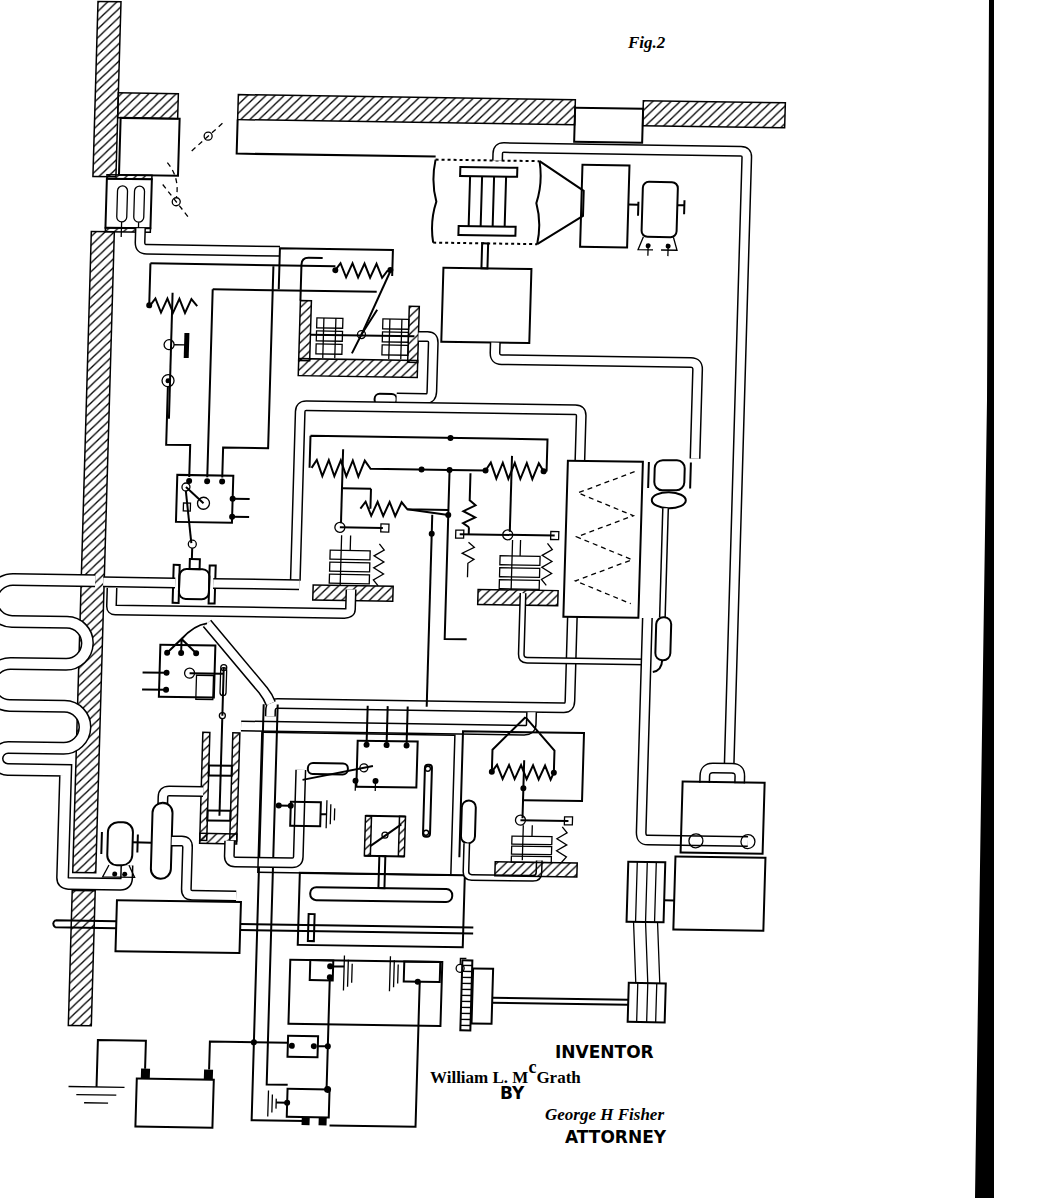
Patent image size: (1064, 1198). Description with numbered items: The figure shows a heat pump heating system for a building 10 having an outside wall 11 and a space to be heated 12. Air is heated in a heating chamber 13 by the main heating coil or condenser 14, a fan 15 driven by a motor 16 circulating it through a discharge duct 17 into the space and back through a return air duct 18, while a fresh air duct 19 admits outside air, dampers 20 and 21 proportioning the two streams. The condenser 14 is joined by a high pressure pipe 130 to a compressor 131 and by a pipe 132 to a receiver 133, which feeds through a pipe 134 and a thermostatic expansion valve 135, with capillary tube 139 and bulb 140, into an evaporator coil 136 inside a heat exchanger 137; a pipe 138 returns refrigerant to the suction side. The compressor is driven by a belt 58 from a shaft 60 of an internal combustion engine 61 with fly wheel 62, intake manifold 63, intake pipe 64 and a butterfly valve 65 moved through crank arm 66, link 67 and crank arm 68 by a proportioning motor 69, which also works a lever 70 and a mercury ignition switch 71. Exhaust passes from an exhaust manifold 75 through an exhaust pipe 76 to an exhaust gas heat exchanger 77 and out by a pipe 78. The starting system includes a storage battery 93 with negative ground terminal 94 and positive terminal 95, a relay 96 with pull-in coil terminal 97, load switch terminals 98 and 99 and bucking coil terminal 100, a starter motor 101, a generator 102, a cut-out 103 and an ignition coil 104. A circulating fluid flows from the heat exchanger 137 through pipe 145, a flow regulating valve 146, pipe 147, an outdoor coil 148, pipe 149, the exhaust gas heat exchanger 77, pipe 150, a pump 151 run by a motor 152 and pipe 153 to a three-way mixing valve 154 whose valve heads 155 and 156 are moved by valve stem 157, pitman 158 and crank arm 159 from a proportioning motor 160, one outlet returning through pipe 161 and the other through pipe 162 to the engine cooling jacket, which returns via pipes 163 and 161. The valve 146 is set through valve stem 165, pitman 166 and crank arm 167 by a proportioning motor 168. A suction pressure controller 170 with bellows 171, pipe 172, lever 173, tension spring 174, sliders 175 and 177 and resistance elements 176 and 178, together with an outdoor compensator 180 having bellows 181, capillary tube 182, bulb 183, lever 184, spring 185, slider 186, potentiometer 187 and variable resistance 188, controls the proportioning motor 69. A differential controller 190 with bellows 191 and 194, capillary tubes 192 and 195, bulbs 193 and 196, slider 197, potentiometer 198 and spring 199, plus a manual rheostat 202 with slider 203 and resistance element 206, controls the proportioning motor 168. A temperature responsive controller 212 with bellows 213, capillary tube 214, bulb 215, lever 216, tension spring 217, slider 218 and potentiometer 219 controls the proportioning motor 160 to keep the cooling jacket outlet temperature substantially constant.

The building 10 is at (69, 70).
The outside wall 11 is at (98, 132).
The space to be heated 12 is at (292, 46).
The heating chamber 13 is at (330, 152).
The heating coil 14 is at (476, 180).
The fan 15 is at (597, 206).
The motor 16 is at (683, 185).
The discharge duct 17 is at (618, 112).
The return air duct 18 is at (236, 136).
The fresh air duct 19 is at (110, 182).
The damper 20 is at (200, 136).
The damper 21 is at (156, 171).
The belt 58 is at (676, 952).
The shaft 60 is at (584, 990).
The heat motor 61 is at (391, 919).
The fly wheel 62 is at (524, 1002).
The intake manifold 63 is at (444, 896).
The intake pipe 64 is at (392, 840).
The butterfly valve 65 is at (414, 854).
The crank arm 66 is at (432, 838).
The link 67 is at (458, 806).
The crank arm 68 is at (442, 756).
The proportioning motor 69 is at (412, 782).
The lever 70 is at (360, 778).
The mercury switch 71 is at (344, 770).
The exhaust manifold 75 is at (336, 916).
The exhaust pipe 76 is at (318, 920).
The heat exchanger 77 is at (194, 932).
The pipe 78 is at (84, 932).
The storage battery 93 is at (195, 1107).
The negative ground terminal 94 is at (180, 1066).
The positive terminal 95 is at (189, 1059).
The relay 96 is at (362, 1099).
The terminal 97 is at (322, 1090).
The terminal 98 is at (291, 1130).
The terminal 99 is at (358, 1120).
The terminal 100 is at (362, 1082).
The starter motor 101 is at (450, 990).
The generator 102 is at (350, 974).
The cut-out 103 is at (332, 1052).
The ignition coil 104 is at (322, 822).
The high pressure pipe 130 is at (746, 288).
The compressor 131 is at (735, 889).
The pipe 132 is at (497, 252).
The receiver 133 is at (484, 308).
The pipe 134 is at (620, 350).
The expansion valve 135 is at (674, 448).
The evaporator coil 136 is at (604, 462).
The heat exchanger 137 is at (612, 612).
The pipe 138 is at (670, 688).
The capillary tube 139 is at (684, 542).
The bulb 140 is at (690, 630).
The pipe 145 is at (530, 404).
The flow regulating valve 146 is at (228, 574).
The pipe 147 is at (142, 576).
The outdoor coil 148 is at (72, 574).
The pipe 149 is at (32, 853).
The pipe 150 is at (230, 890).
The pump 151 is at (172, 812).
The motor 152 is at (140, 818).
The pipe 153 is at (202, 784).
The three-way mixing valve 154 is at (222, 740).
The valve head 155 is at (230, 766).
The valve head 156 is at (230, 811).
The valve stem 157 is at (248, 726).
The pitman 158 is at (248, 688).
The crank arm 159 is at (214, 696).
The proportioning motor 160 is at (178, 656).
The pipe 161 is at (292, 718).
The pipe 162 is at (264, 857).
The pipe 163 is at (470, 780).
The valve stem 165 is at (202, 546).
The pitman 166 is at (196, 520).
The crank arm 167 is at (196, 490).
The proportioning motor 168 is at (226, 516).
The suction pressure controller 170 is at (502, 620).
The bellows 171 is at (514, 566).
The pipe 172 is at (538, 652).
The lever 173 is at (534, 520).
The tension spring 174 is at (552, 534).
The slider 175 is at (530, 482).
The potentiometer resistance element 176 is at (510, 456).
The slider 177 is at (494, 524).
The center tapped resistance element 178 is at (464, 504).
The outdoor temperature compensator 180 is at (418, 614).
The bellows 181 is at (348, 554).
The capillary tube 182 is at (296, 612).
The bulb 183 is at (122, 207).
The lever 184 is at (403, 528).
The spring 185 is at (398, 565).
The slider 186 is at (354, 482).
The potentiometer resistance element 187 is at (428, 456).
The variable resistance 188 is at (396, 500).
The differential controller 190 is at (345, 377).
The bellows 191 is at (386, 312).
The capillary tube 192 is at (442, 372).
The bulb 193 is at (396, 388).
The bellows 194 is at (326, 343).
The capillary tube 195 is at (220, 246).
The bulb 196 is at (160, 230).
The slider 197 is at (390, 285).
The potentiometer resistance element 198 is at (356, 262).
The spring 199 is at (354, 290).
The manual rheostat 202 is at (160, 352).
The slider 203 is at (178, 325).
The resistance element 206 is at (212, 296).
The temperature responsive controller 212 is at (586, 884).
The bellows 213 is at (536, 840).
The capillary tube 214 is at (518, 870).
The bulb 215 is at (500, 810).
The lever 216 is at (572, 812).
The tension spring 217 is at (590, 840).
The slider 218 is at (546, 782).
The potentiometer resistance element 219 is at (532, 754).